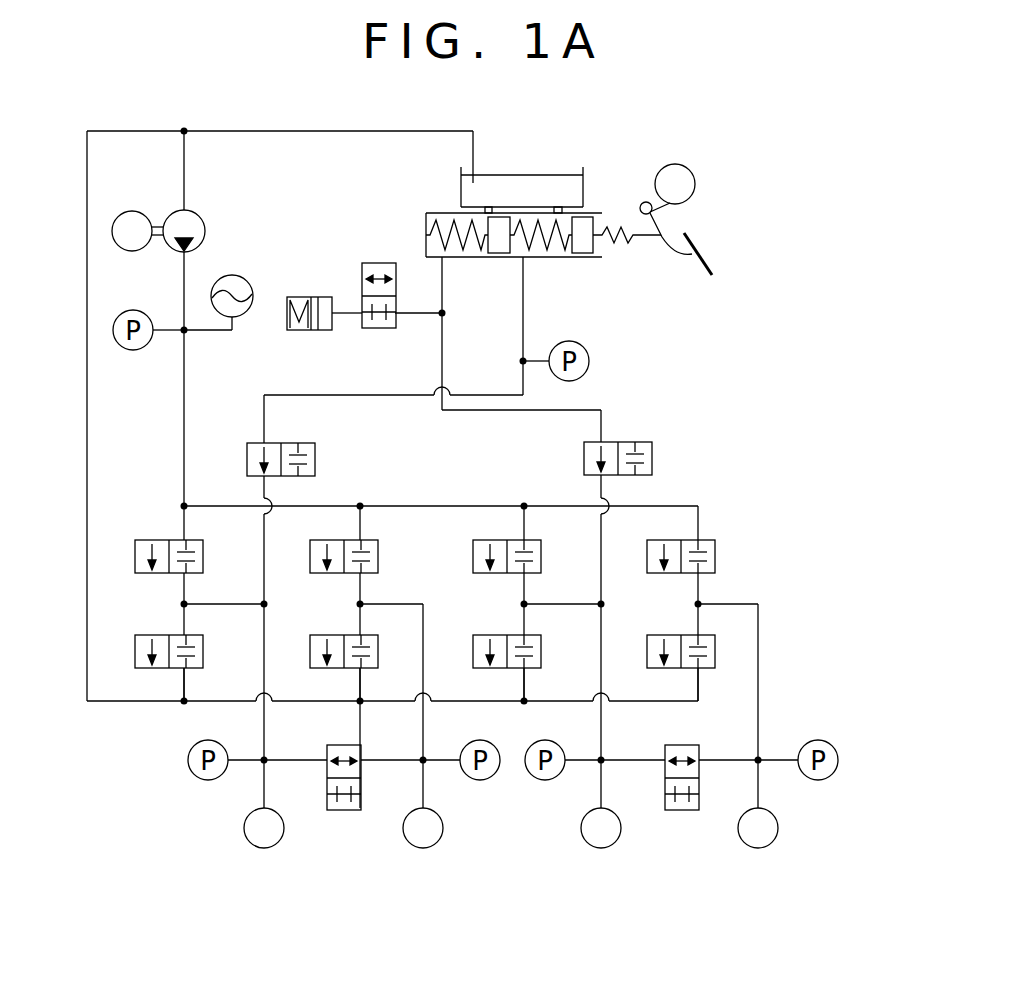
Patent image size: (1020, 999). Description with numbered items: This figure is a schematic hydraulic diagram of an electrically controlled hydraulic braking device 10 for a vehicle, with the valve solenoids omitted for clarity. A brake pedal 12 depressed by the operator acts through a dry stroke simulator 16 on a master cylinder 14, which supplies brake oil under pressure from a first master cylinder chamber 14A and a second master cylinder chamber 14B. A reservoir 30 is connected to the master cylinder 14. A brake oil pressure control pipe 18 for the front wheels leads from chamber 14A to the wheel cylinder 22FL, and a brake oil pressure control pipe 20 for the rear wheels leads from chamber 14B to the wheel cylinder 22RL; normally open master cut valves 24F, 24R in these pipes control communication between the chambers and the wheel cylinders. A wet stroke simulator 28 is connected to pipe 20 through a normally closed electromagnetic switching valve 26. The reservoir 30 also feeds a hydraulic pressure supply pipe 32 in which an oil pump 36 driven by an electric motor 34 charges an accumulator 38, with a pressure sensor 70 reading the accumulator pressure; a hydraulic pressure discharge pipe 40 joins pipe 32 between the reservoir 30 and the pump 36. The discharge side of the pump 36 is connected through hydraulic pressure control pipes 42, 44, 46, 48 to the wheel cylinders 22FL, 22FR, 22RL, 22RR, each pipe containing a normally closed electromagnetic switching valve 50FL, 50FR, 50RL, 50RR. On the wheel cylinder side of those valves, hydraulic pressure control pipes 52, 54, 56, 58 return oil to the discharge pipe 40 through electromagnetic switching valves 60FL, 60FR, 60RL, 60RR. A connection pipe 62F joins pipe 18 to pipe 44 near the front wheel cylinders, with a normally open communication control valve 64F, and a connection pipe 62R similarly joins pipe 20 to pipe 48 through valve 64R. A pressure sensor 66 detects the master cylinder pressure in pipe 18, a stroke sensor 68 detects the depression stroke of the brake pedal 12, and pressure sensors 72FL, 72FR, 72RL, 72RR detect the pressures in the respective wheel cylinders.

The electrically controlled hydraulic braking device 10 is at (575, 153).
The brake pedal 12 is at (697, 246).
The master cylinder 14 is at (447, 213).
The first master cylinder chamber 14A is at (548, 255).
The second master cylinder chamber 14B is at (462, 257).
The dry stroke simulator 16 is at (632, 240).
The brake oil pressure control pipe for front wheels 18 is at (523, 325).
The brake oil pressure control pipe for rear wheels 20 is at (442, 345).
The wheel cylinder for front left wheel 22FL is at (262, 848).
The wheel cylinder for front right wheel 22FR is at (420, 848).
The wheel cylinder for rear left wheel 22RL is at (598, 848).
The wheel cylinder for rear right wheel 22RR is at (755, 848).
The electromagnetic switching valve (master cut valve) 24F is at (315, 457).
The electromagnetic switching valve (master cut valve) 24R is at (652, 457).
The electromagnetic switching valve 26 is at (382, 263).
The wet stroke simulator 28 is at (296, 332).
The reservoir 30 is at (518, 180).
The hydraulic pressure supply pipe 32 is at (308, 131).
The electric motor 34 is at (132, 210).
The oil pump 36 is at (200, 214).
The accumulator 38 is at (238, 276).
The hydraulic pressure discharge pipe 40 is at (88, 450).
The hydraulic pressure control pipe 42 is at (225, 600).
The hydraulic pressure control pipe 44 is at (408, 600).
The hydraulic pressure control pipe 46 is at (565, 600).
The hydraulic pressure control pipe 48 is at (758, 657).
The electromagnetic switching valve 50FL is at (135, 548).
The electromagnetic switching valve 50FR is at (310, 562).
The electromagnetic switching valve 50RL is at (473, 553).
The electromagnetic switching valve 50RR is at (715, 550).
The hydraulic pressure control pipe 52 is at (185, 683).
The hydraulic pressure control pipe 54 is at (360, 683).
The hydraulic pressure control pipe 56 is at (524, 683).
The hydraulic pressure control pipe 58 is at (698, 683).
The electromagnetic switching valve 60FL is at (135, 642).
The electromagnetic switching valve 60FR is at (310, 656).
The electromagnetic switching valve 60RL is at (473, 650).
The electromagnetic switching valve 60RR is at (647, 648).
The connection pipe 62F is at (292, 756).
The connection pipe 62R is at (628, 756).
The electromagnetic switching valve 64F is at (342, 810).
The electromagnetic switching valve 64R is at (677, 810).
The pressure sensor 66 is at (589, 363).
The stroke sensor 68 is at (689, 170).
The pressure sensor 70 is at (122, 346).
The pressure sensor 72FL is at (200, 779).
The pressure sensor 72FR is at (470, 741).
The pressure sensor 72RL is at (540, 779).
The pressure sensor 72RR is at (822, 740).